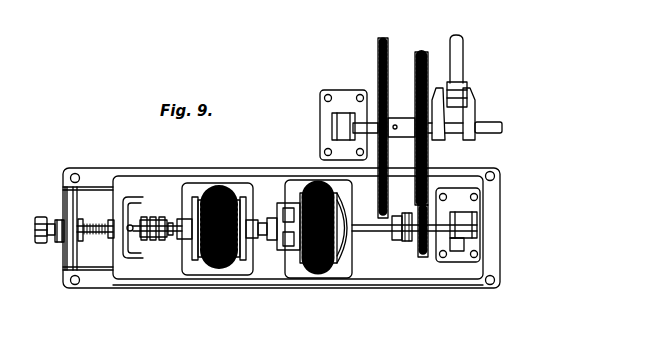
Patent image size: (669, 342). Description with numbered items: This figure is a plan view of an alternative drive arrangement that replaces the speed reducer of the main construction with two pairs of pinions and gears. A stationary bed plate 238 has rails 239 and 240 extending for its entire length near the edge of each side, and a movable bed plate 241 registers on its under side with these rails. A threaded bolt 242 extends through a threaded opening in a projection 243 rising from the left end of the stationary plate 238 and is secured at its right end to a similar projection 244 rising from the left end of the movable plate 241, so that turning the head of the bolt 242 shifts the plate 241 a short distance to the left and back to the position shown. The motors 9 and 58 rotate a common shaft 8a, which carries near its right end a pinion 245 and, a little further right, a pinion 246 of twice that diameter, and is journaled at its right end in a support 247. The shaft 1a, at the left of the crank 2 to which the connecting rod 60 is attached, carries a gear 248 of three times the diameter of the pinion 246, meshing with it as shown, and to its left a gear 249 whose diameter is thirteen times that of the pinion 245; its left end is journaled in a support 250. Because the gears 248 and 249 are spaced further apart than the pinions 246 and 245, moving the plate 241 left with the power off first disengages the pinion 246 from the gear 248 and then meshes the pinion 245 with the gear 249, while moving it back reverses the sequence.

The shaft 1a is at (490, 133).
The crank 2 is at (474, 112).
The common shaft 8a is at (271, 218).
The three phase slip ring induction high speed motor 9 is at (222, 250).
The two-speed three phase squirrel cage induction motor 58 is at (315, 263).
The connecting rod 60 is at (462, 66).
The stationary bed plate 238 is at (140, 180).
The rail 239 is at (93, 186).
The rail 240 is at (492, 270).
The movable bed plate 241 is at (208, 183).
The threaded bolt 242 is at (42, 216).
The projection 243 is at (68, 257).
The projection 244 is at (120, 247).
The pinion 245 is at (407, 241).
The pinion 246 is at (423, 258).
The support 247 is at (476, 213).
The gear 248 is at (422, 52).
The gear 249 is at (383, 38).
The support 250 is at (326, 138).